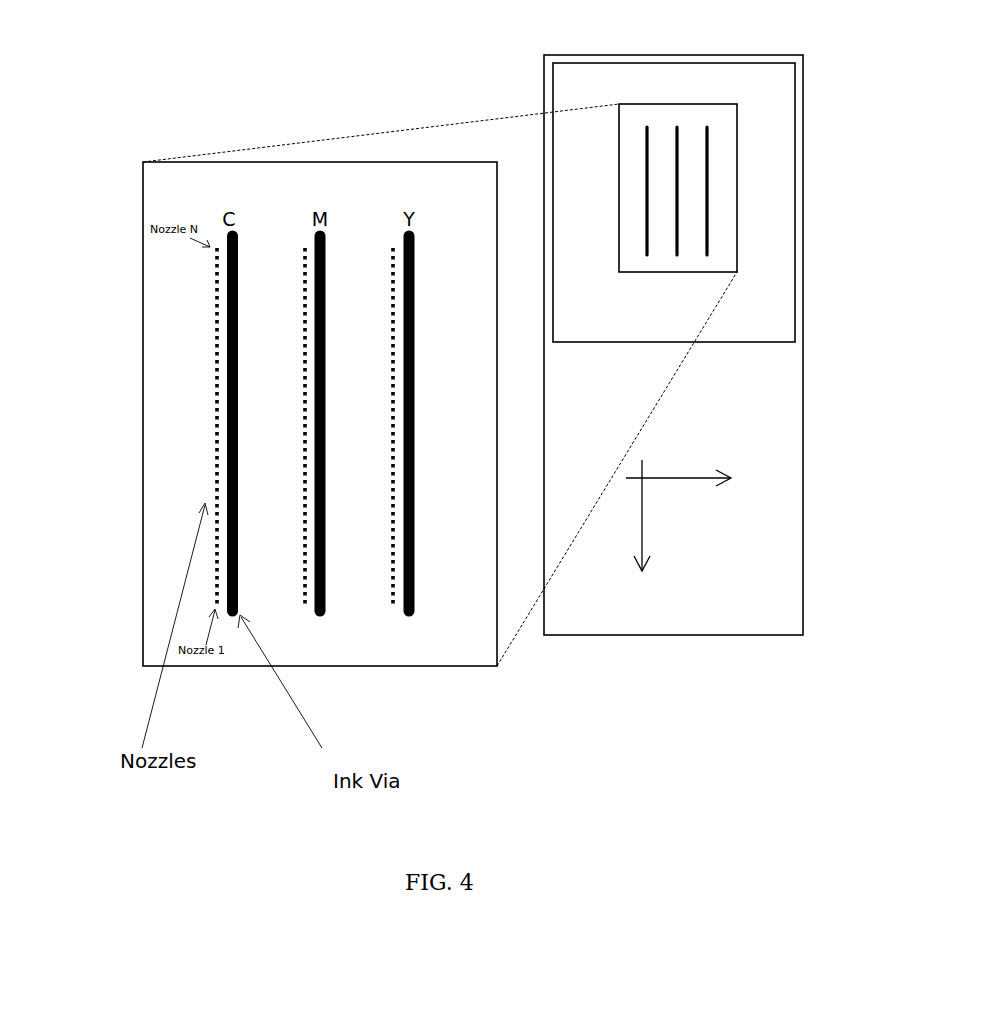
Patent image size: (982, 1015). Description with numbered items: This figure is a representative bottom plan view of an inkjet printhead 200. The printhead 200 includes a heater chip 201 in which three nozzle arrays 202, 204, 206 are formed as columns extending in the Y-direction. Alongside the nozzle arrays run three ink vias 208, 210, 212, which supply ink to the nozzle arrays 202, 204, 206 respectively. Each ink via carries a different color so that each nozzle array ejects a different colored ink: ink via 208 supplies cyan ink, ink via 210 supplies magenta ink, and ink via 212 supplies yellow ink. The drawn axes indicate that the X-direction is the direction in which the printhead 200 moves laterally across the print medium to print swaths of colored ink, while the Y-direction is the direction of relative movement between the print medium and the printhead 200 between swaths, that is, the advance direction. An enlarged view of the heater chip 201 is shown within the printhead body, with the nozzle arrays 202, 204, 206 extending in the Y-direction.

The printhead 200 is at (812, 415).
The heater chip 201 is at (128, 257).
The nozzle array 202 is at (211, 436).
The nozzle array 204 is at (299, 265).
The nozzle array 206 is at (388, 265).
The ink via 208 is at (228, 316).
The ink via 210 is at (324, 608).
The ink via 212 is at (413, 608).